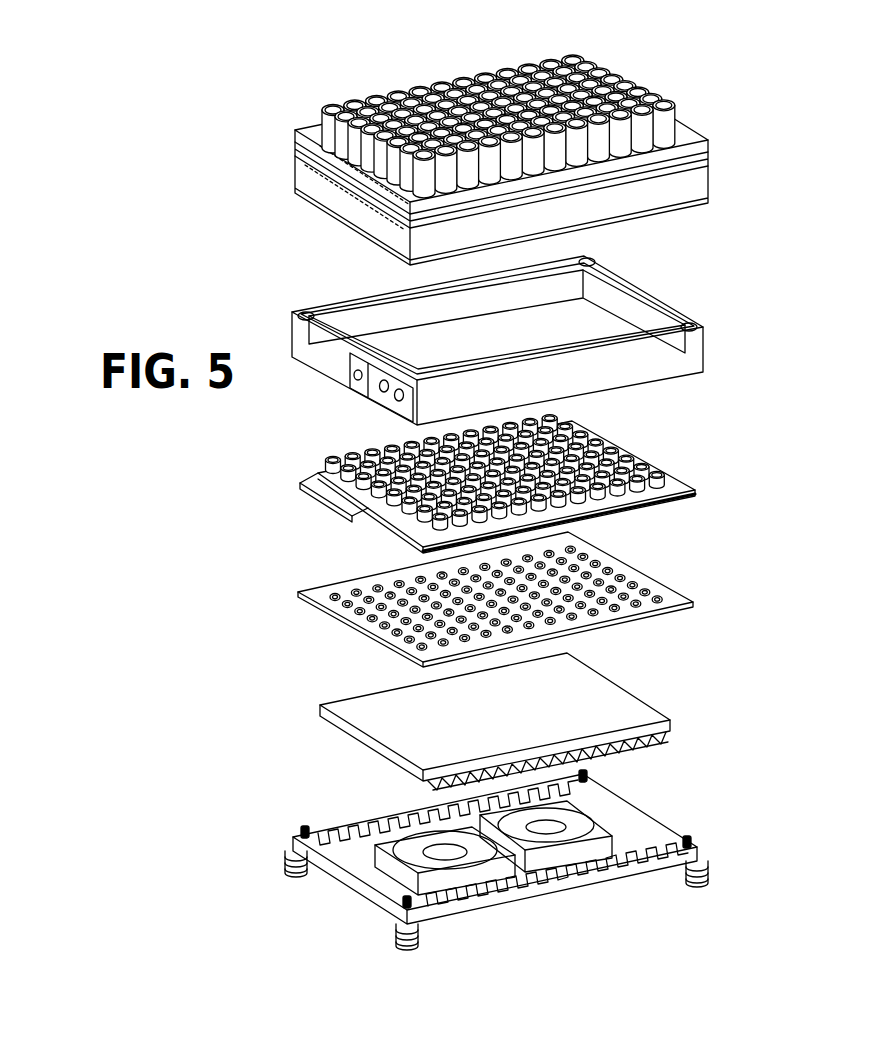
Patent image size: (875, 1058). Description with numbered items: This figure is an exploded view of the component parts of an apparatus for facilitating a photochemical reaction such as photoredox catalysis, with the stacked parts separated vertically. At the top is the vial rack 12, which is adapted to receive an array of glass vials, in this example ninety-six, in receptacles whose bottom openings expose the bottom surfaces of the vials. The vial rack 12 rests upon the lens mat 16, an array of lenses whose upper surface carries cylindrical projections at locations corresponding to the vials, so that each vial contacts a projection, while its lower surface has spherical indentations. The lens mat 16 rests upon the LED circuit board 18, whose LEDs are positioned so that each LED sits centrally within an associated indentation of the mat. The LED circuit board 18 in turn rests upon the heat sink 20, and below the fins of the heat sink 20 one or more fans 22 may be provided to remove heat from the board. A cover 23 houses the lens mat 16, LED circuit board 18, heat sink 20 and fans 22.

The vial rack 12 is at (728, 172).
The cover 23 is at (728, 326).
The lens mat 16 is at (686, 469).
The LED circuit board 18 is at (686, 567).
The heat sink 20 is at (673, 685).
The fans 22 is at (465, 842).